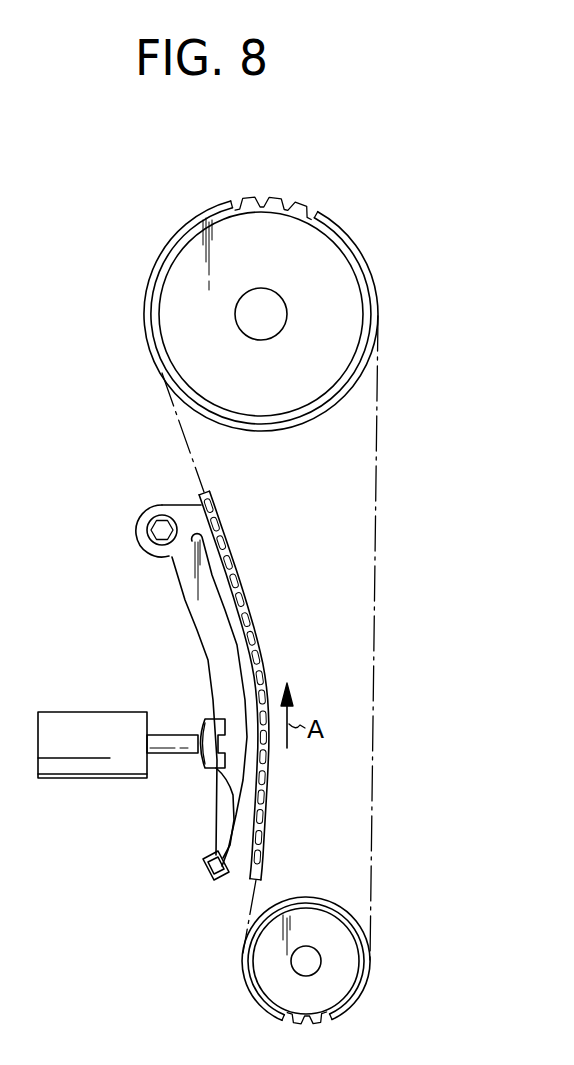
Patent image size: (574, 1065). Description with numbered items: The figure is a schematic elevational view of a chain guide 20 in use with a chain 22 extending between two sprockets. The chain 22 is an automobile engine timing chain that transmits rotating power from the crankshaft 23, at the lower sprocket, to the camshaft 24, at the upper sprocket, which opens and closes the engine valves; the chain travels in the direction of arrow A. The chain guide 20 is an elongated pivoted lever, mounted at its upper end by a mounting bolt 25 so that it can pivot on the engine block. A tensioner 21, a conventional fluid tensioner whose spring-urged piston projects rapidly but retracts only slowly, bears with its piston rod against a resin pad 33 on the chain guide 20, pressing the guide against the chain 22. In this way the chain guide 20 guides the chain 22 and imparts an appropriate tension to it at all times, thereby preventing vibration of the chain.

The chain guide 20 is at (194, 607).
The tensioner 21 is at (91, 711).
The chain 22 is at (212, 500).
The crankshaft 23 is at (304, 947).
The camshaft 24 is at (260, 288).
The mounting bolt 25 is at (163, 520).
The pad 33 is at (208, 769).